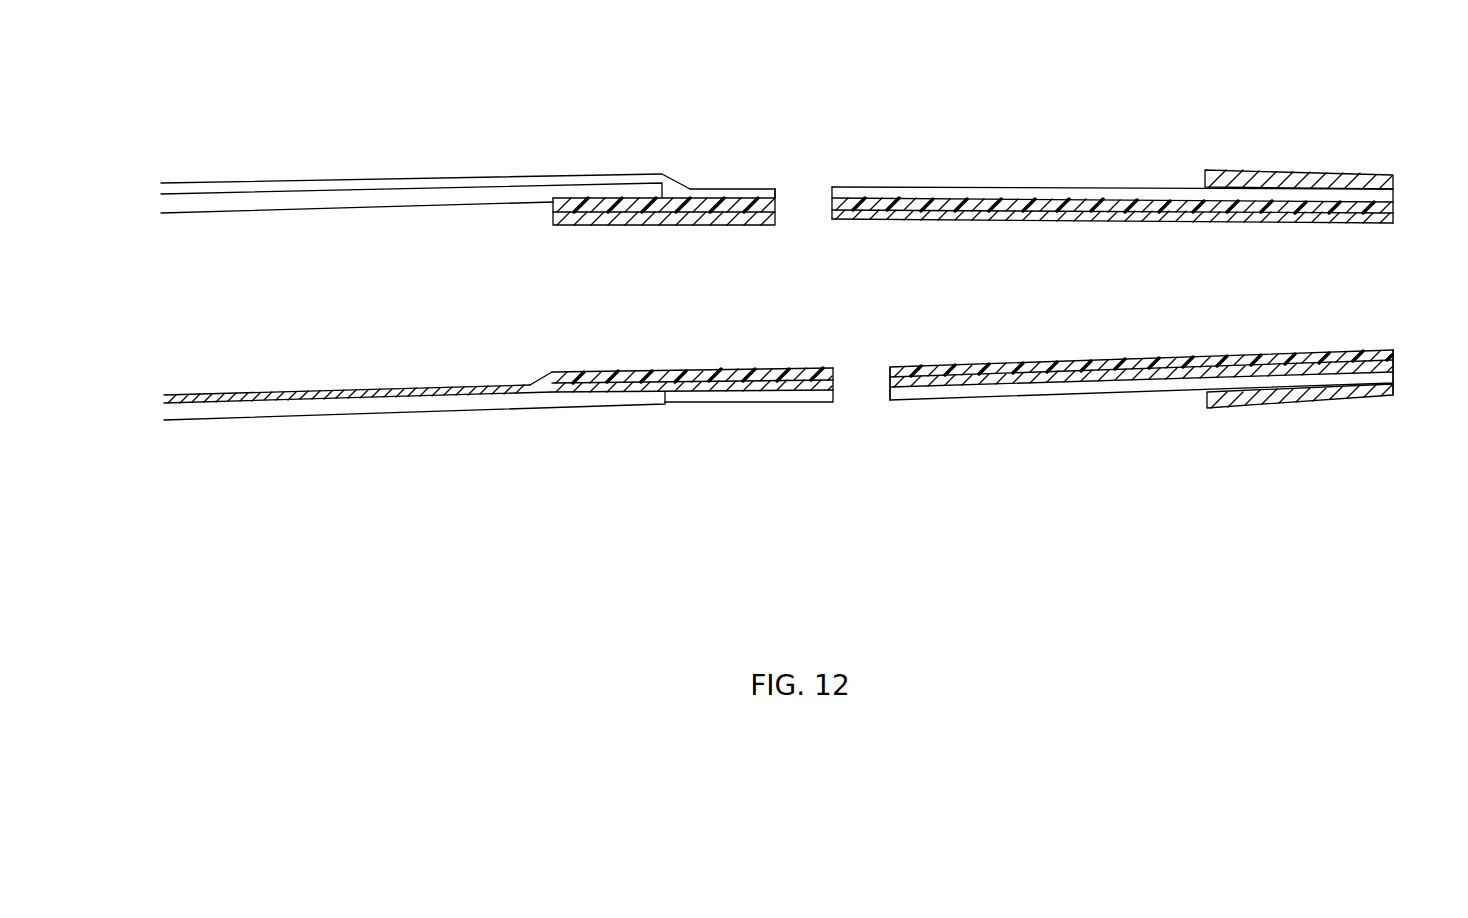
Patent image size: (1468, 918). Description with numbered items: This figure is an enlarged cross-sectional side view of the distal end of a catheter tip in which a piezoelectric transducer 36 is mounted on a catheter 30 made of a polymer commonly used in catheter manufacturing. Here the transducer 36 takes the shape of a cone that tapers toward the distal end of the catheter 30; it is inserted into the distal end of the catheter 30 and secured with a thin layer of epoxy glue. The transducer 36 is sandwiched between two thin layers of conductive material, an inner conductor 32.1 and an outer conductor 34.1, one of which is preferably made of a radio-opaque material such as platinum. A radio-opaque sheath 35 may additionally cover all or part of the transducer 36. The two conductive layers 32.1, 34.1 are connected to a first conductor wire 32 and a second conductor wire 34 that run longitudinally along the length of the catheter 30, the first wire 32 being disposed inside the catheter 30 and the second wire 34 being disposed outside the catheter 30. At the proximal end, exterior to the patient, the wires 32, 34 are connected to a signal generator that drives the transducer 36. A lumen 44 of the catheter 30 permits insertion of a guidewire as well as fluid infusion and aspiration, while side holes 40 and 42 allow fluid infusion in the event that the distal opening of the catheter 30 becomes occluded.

The catheter 30 is at (263, 197).
The first conductor wire 32 is at (373, 402).
The inner conductor 32.1 is at (590, 207).
The second conductor wire 34 is at (370, 183).
The outer conductor 34.1 is at (995, 187).
The radio-opaque sheath 35 is at (1283, 172).
The piezoelectric transducer 36 is at (700, 203).
The side hole 40 is at (805, 203).
The side hole 42 is at (877, 395).
The lumen 44 is at (1353, 283).